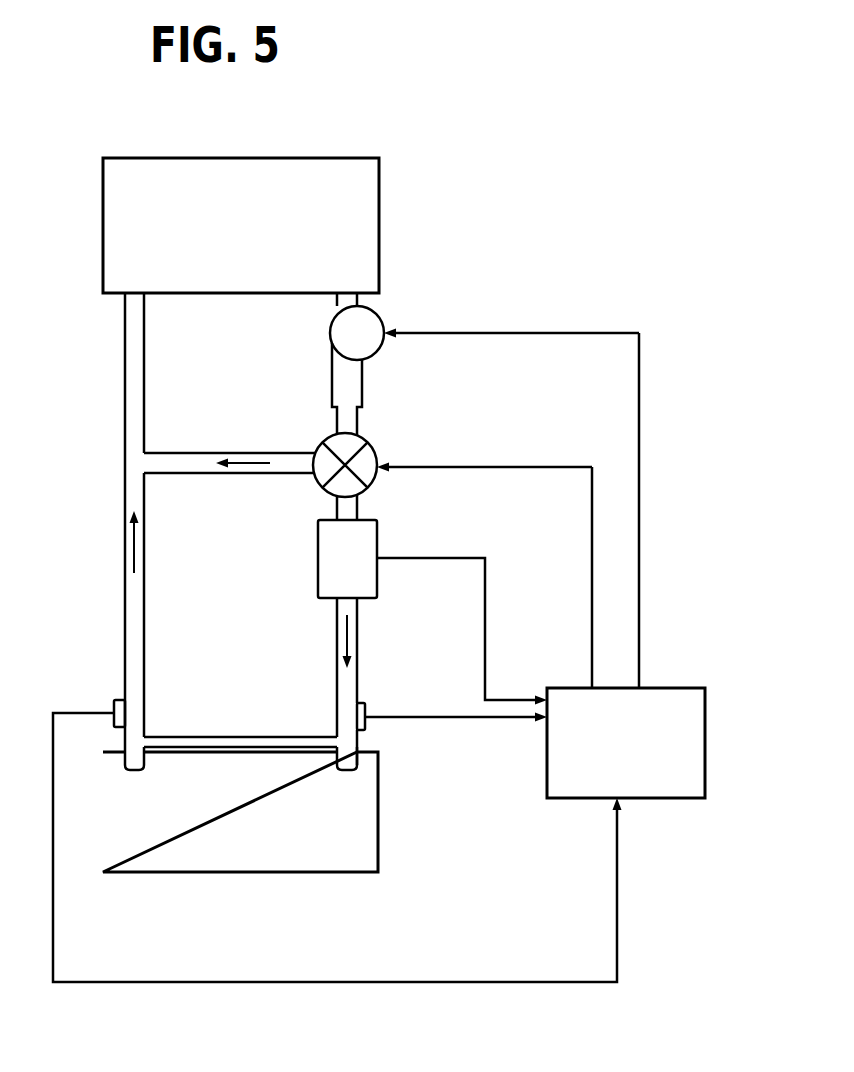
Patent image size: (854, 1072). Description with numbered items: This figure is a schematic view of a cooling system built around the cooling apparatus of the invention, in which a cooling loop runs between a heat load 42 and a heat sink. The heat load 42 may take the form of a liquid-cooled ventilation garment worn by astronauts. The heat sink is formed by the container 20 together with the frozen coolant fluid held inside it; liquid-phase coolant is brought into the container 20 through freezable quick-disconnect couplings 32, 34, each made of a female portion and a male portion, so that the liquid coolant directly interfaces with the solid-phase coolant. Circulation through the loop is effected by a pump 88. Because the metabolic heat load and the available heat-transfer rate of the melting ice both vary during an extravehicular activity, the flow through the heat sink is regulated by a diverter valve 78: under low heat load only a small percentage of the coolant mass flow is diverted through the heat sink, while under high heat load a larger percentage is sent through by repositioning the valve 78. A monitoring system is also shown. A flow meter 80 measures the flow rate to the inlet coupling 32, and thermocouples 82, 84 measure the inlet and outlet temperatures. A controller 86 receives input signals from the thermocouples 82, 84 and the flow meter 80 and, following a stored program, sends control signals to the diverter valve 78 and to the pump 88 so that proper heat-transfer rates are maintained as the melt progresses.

The heat load 42 is at (290, 158).
The pump 88 is at (380, 316).
The diverter valve 78 is at (375, 452).
The flow meter 80 is at (318, 540).
The quick-disconnect coupling 34 is at (145, 735).
The quick-disconnect coupling 32 is at (358, 735).
The container 20 is at (187, 873).
The thermocouple 84 is at (113, 705).
The thermocouple 82 is at (367, 705).
The controller 86 is at (663, 688).